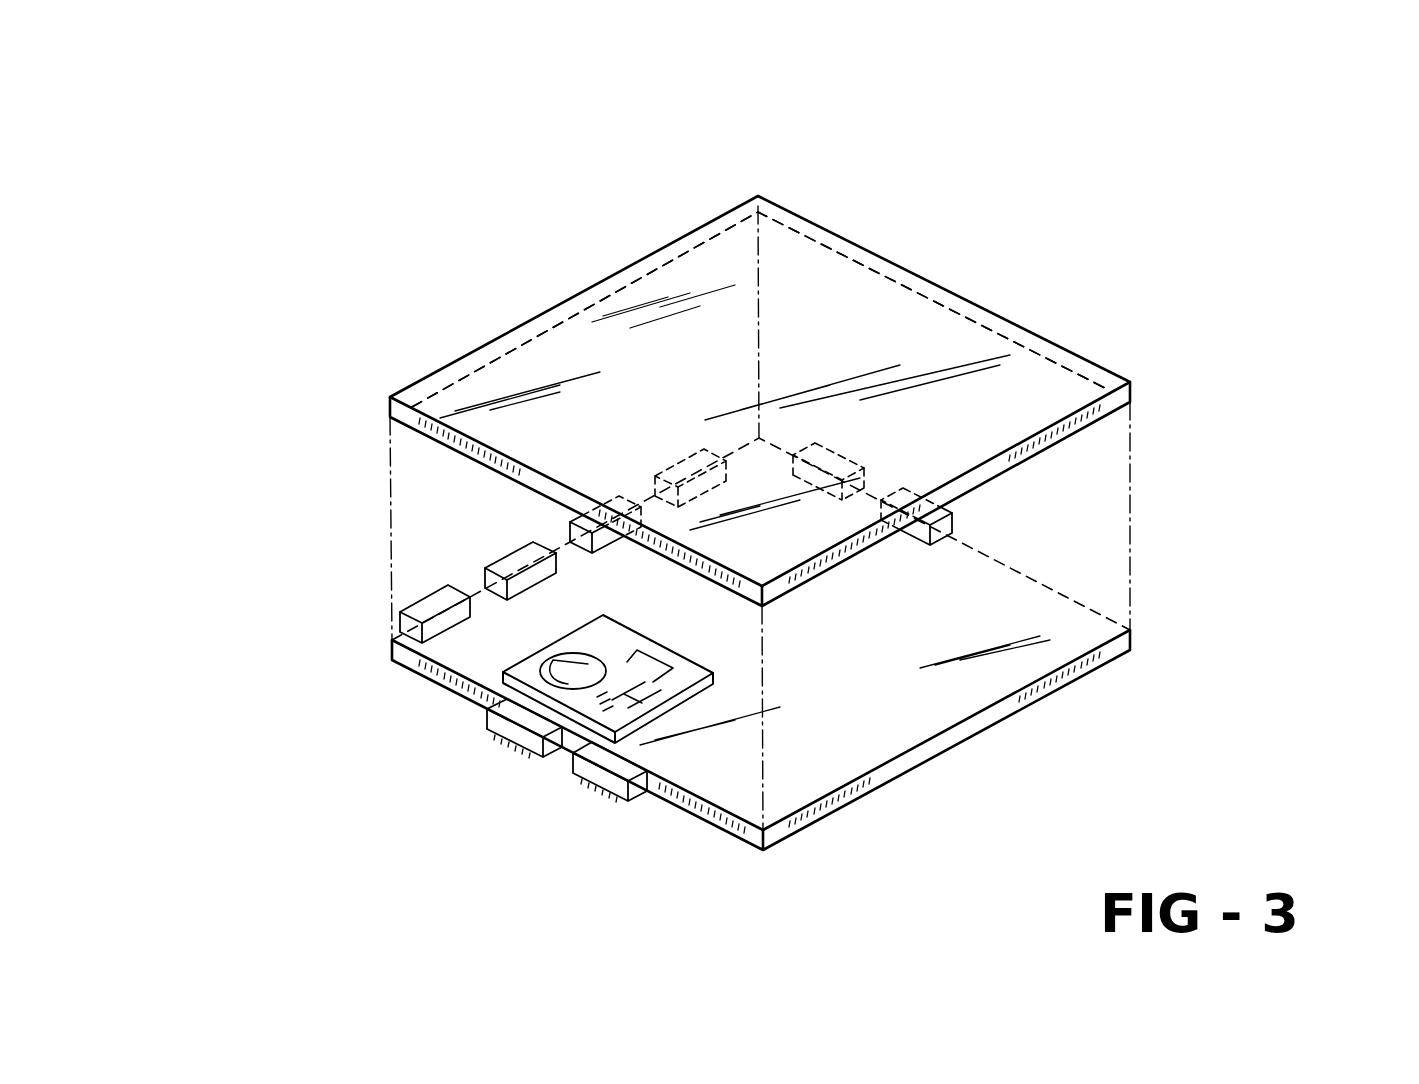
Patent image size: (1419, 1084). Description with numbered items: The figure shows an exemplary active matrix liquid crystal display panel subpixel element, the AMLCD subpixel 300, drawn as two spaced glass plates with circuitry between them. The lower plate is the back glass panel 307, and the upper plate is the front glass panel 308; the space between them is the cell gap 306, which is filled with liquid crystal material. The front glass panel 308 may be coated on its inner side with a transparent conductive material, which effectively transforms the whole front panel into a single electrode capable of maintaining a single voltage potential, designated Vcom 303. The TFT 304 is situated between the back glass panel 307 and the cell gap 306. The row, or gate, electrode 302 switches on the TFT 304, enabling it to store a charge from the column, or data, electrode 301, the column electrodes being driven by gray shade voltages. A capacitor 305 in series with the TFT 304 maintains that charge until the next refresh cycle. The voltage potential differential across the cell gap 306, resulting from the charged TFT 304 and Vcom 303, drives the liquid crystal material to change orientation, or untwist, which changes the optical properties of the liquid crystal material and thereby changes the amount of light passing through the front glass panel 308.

The AMLCD subpixel 300 is at (1172, 168).
The column electrode 301 is at (590, 787).
The row electrode 302 is at (527, 652).
The Vcom 303 is at (560, 298).
The TFT 304 is at (535, 621).
The capacitor 305 is at (663, 685).
The cell gap 306 is at (1177, 399).
The back glass panel 307 is at (1028, 702).
The front glass panel 308 is at (1023, 335).